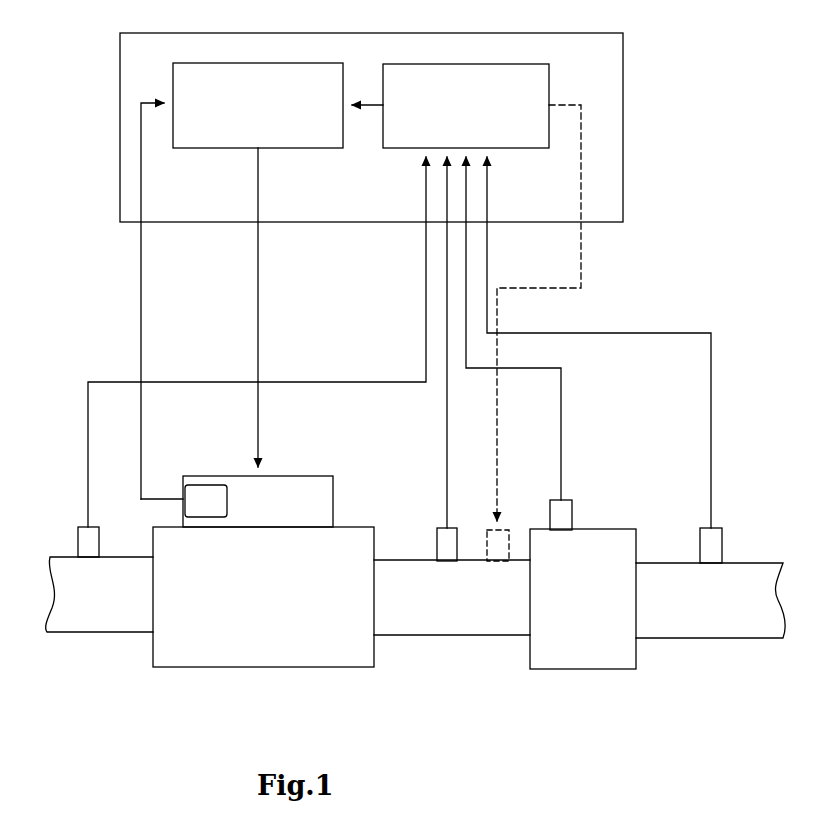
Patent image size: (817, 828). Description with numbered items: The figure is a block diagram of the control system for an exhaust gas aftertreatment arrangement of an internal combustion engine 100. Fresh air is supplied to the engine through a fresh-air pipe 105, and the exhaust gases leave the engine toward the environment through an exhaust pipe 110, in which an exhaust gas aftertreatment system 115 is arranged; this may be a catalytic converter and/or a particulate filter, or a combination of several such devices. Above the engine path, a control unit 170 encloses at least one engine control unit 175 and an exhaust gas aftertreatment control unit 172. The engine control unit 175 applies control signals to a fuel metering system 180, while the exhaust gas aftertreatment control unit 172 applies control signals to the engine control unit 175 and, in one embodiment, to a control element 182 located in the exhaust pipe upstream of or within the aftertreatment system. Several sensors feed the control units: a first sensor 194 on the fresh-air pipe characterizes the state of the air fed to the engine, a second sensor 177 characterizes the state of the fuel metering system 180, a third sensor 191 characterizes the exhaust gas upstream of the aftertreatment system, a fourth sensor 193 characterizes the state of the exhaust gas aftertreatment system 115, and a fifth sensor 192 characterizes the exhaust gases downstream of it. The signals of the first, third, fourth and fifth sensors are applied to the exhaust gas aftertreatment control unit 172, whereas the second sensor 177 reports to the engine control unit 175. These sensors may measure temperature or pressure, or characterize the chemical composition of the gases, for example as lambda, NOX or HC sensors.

The internal combustion engine 100 is at (263, 597).
The fresh-air pipe 105 is at (99, 594).
The exhaust pipe 110 is at (579, 599).
The exhaust gas aftertreatment system 115 is at (583, 599).
The control unit 170 is at (371, 127).
The exhaust gas aftertreatment control unit 172 is at (403, 265).
The engine control unit 175 is at (262, 281).
The second sensor 177 is at (206, 501).
The fuel metering system 180 is at (237, 501).
The control element 182 is at (460, 359).
The third sensor 191 is at (484, 333).
The fifth sensor 192 is at (622, 360).
The fourth sensor 193 is at (541, 343).
The first sensor 194 is at (252, 357).